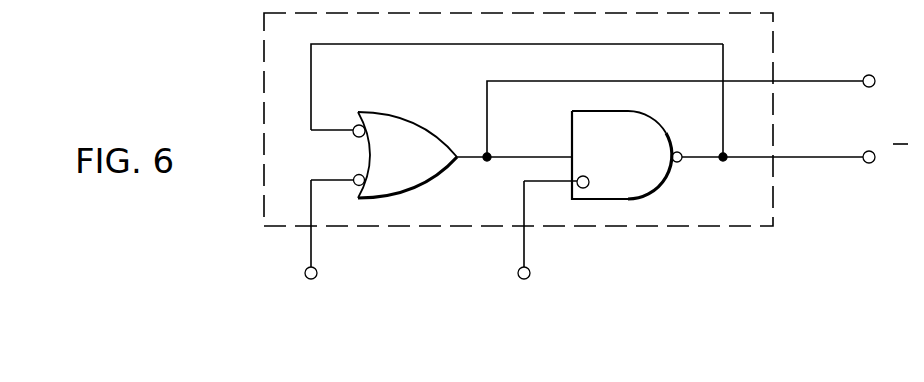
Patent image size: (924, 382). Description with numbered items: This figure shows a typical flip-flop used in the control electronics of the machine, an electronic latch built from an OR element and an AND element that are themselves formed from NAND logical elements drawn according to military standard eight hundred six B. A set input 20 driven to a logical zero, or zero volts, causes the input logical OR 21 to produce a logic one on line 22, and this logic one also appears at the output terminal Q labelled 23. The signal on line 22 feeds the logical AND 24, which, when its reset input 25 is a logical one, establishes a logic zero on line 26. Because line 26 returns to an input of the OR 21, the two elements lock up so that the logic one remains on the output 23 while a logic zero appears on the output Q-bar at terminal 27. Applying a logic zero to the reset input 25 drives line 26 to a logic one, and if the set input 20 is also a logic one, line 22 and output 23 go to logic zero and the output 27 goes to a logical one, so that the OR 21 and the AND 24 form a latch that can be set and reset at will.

The set input 20 is at (312, 253).
The logical OR 21 is at (405, 119).
The line 22 is at (473, 159).
The output terminal Q 23 is at (826, 81).
The logical AND 24 is at (657, 121).
The reset input 25 is at (525, 255).
The line 26 is at (724, 134).
The output terminal Q-bar 27 is at (815, 159).